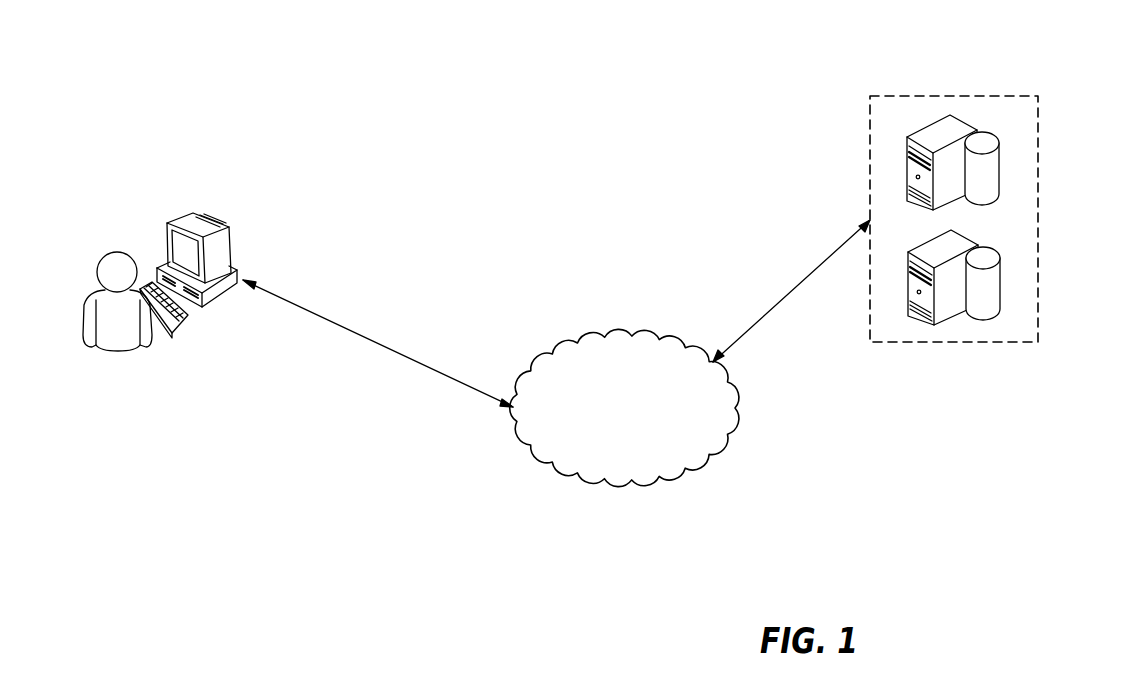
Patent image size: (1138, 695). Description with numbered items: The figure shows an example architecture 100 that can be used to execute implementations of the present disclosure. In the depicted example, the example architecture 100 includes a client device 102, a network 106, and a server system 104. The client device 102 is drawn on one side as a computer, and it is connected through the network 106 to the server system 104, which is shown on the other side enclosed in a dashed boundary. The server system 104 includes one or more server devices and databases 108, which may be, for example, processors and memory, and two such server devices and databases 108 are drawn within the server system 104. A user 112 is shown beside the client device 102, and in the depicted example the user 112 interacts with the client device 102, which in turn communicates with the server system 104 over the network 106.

The example architecture 100 is at (475, 97).
The client device 102 is at (163, 230).
The server system 104 is at (1038, 220).
The network 106 is at (625, 336).
The server devices and databases 108 is at (907, 160).
The user 112 is at (118, 350).